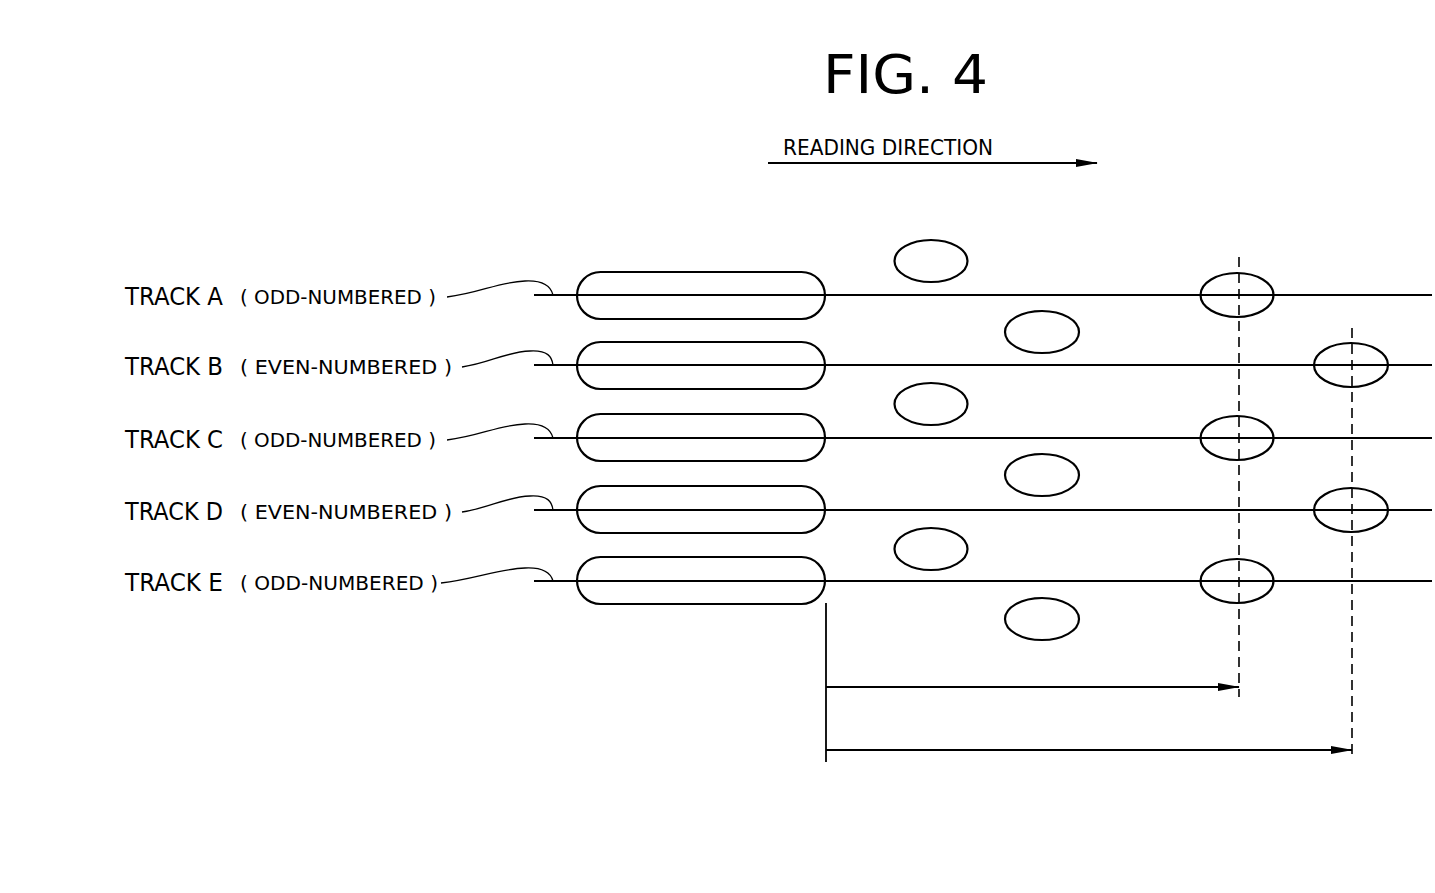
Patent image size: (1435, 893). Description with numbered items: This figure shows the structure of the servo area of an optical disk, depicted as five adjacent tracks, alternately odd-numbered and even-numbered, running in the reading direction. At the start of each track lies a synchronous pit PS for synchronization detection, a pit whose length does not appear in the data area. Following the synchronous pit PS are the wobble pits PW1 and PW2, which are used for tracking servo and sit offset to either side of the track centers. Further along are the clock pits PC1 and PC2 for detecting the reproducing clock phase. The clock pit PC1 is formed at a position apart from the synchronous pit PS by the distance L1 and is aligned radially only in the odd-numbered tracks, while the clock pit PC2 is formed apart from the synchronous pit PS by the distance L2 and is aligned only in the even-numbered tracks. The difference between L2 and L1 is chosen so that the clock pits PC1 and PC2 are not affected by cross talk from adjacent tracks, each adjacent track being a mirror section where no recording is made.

The synchronous pit PS is at (632, 605).
The wobble pit PW1 is at (914, 282).
The wobble pit PW2 is at (1021, 353).
The clock pit PC1 is at (1207, 308).
The clock pit PC2 is at (1326, 383).
The distance L1 is at (1032, 701).
The distance L2 is at (1089, 765).